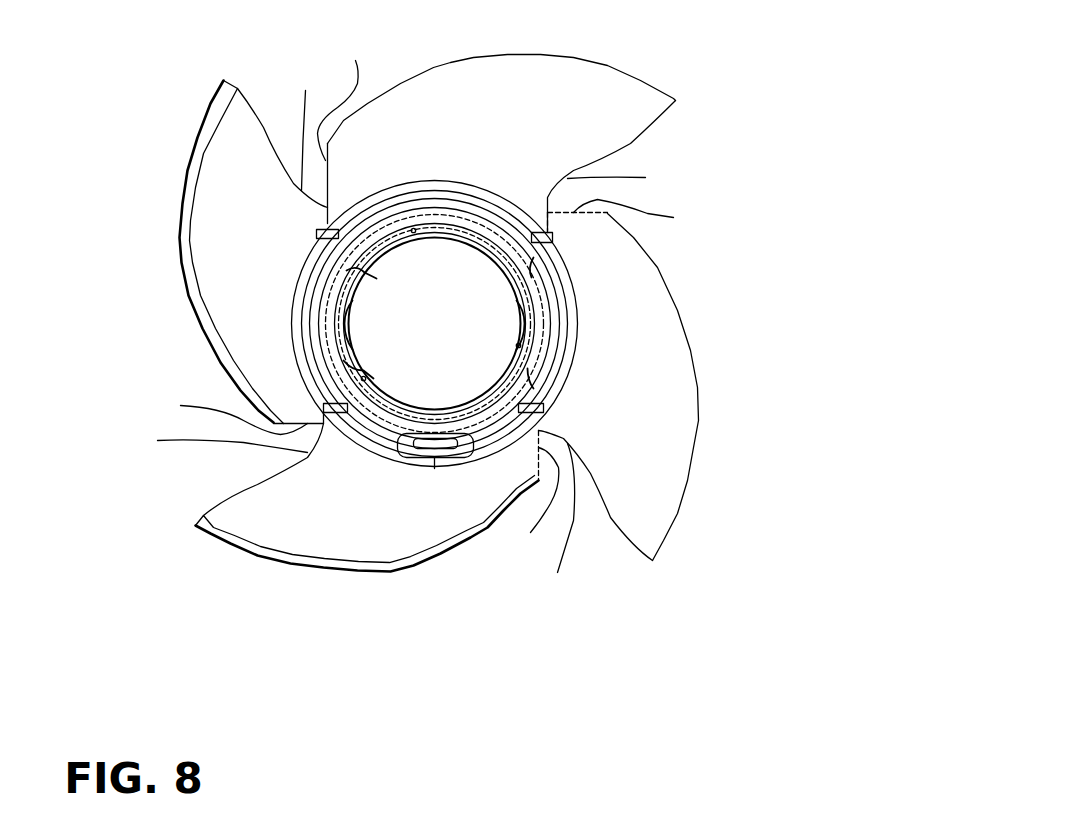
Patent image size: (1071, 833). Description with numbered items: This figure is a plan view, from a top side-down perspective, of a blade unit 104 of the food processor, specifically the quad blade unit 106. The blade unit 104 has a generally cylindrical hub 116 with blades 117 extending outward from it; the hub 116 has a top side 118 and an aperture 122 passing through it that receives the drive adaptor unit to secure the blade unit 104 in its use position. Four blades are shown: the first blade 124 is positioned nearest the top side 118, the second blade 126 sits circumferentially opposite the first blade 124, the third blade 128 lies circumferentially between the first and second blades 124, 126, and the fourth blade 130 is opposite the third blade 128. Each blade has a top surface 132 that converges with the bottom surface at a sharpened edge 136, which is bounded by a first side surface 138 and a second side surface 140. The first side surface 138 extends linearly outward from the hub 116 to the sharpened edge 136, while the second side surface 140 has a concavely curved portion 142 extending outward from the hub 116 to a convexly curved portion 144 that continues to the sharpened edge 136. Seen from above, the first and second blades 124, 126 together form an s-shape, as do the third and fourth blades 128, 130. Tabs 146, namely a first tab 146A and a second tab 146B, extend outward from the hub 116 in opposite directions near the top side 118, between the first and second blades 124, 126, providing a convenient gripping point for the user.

The blade unit 104 is at (752, 44).
The quad blade unit 106 is at (752, 90).
The hub 116 is at (483, 198).
The blades 117 is at (353, 171).
The top side 118 is at (492, 240).
The aperture 122 is at (423, 333).
The first blade 124 is at (453, 143).
The second blade 126 is at (369, 505).
The third blade 128 is at (598, 371).
The fourth blade 130 is at (226, 285).
The top surface 132 is at (440, 325).
The sharpened edge 136 is at (416, 74).
The first side surface 138 is at (424, 296).
The second side surface 140 is at (274, 143).
The concavely curved portion 142 is at (401, 329).
The convexly curved portion 144 is at (247, 95).
The tabs 146 is at (337, 292).
The first tab 146A is at (337, 317).
The second tab 146B is at (530, 298).